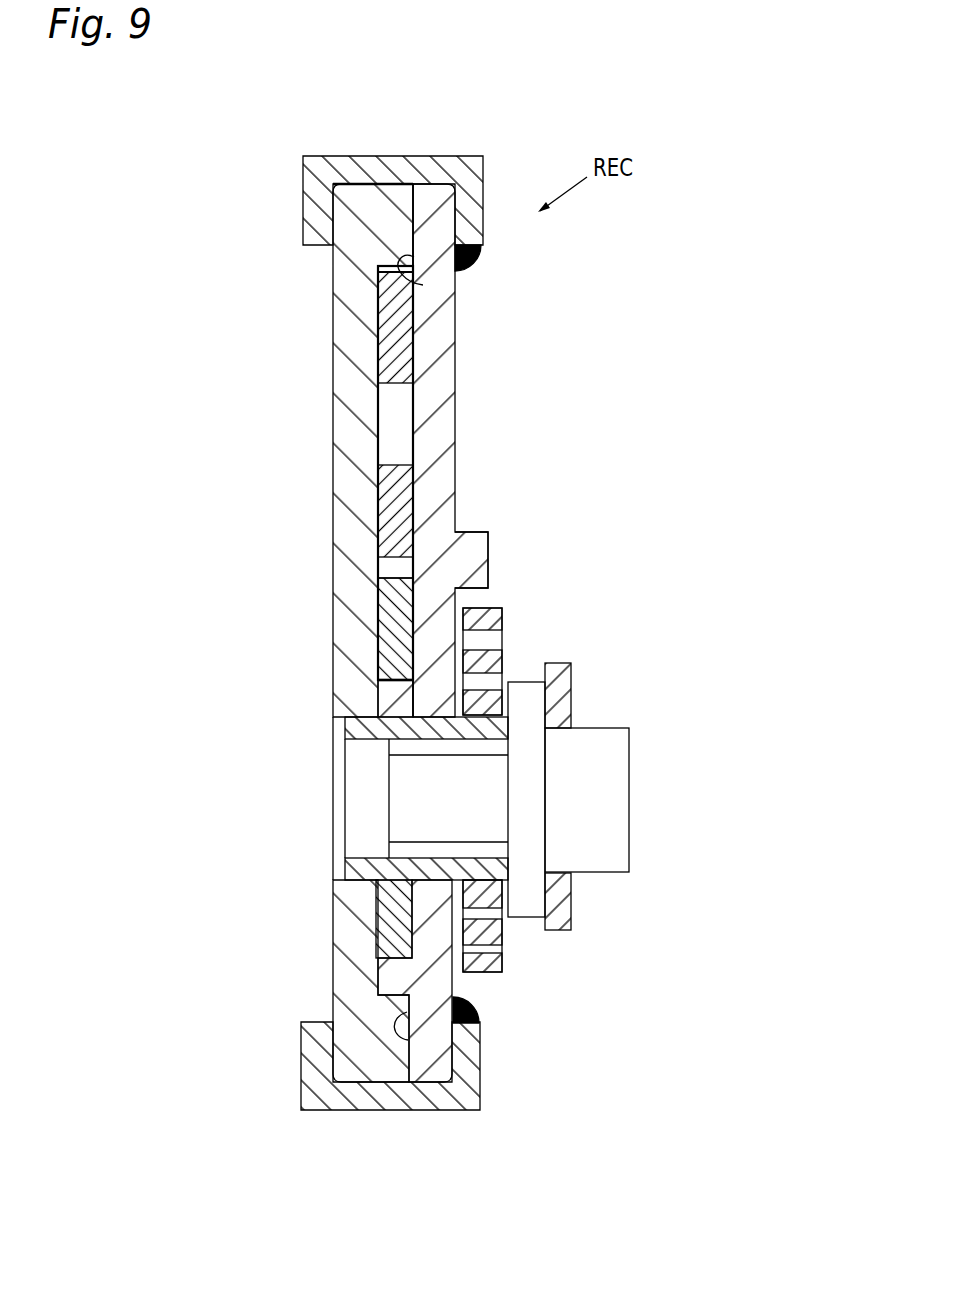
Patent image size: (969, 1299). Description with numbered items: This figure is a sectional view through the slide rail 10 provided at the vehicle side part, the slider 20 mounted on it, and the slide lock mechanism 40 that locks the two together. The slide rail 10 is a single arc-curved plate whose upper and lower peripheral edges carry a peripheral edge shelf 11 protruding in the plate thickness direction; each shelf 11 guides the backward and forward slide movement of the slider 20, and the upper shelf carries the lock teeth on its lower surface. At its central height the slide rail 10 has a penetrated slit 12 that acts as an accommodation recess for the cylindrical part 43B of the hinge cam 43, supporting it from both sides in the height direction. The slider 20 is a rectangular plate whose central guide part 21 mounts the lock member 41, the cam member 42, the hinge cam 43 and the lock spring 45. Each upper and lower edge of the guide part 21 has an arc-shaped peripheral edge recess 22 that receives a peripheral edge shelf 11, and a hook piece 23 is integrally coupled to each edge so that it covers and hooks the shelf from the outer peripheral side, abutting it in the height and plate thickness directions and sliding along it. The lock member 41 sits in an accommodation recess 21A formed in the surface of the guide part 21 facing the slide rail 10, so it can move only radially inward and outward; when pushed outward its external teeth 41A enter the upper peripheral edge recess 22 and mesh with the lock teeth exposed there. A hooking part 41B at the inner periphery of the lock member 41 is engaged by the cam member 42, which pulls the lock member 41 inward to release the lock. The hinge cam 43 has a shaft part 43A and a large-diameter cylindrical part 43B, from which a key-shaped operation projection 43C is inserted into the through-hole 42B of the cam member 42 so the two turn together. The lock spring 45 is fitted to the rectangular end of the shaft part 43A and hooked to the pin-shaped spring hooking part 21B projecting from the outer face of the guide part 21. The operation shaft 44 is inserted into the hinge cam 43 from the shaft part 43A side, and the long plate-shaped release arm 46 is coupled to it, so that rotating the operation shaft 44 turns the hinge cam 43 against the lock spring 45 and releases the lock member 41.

The slide rail 10 is at (303, 638).
The peripheral edge shelf 11 is at (391, 217).
The slit 12 is at (340, 719).
The slider 20 is at (457, 340).
The guide part 21 is at (433, 462).
The accommodation recess 21A is at (416, 440).
The spring hooking part 21B is at (460, 553).
The peripheral edge recess 22 is at (423, 285).
The hook piece 23 is at (443, 165).
The slide lock mechanism 40 is at (368, 415).
The lock member 41 is at (397, 317).
The external teeth 41A is at (378, 266).
The hooking part 41B is at (397, 516).
The cam member 42 is at (402, 638).
The through-hole 42B is at (402, 688).
The hinge cam 43 is at (400, 854).
The shaft part 43A is at (490, 858).
The cylindrical part 43B is at (365, 728).
The operation projection 43C is at (400, 698).
The operation shaft 44 is at (483, 786).
The lock spring 45 is at (488, 620).
The release arm 46 is at (558, 680).